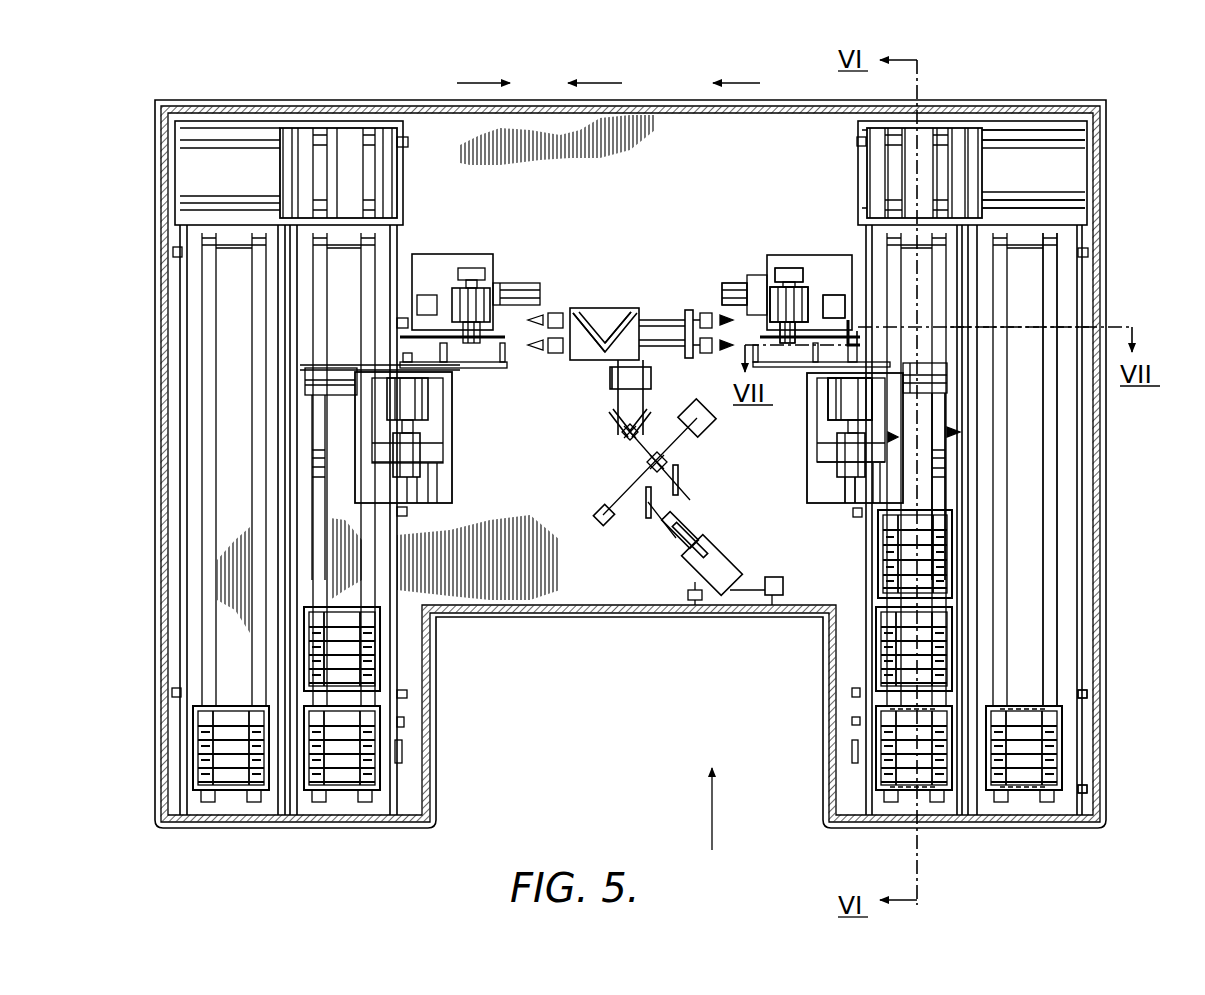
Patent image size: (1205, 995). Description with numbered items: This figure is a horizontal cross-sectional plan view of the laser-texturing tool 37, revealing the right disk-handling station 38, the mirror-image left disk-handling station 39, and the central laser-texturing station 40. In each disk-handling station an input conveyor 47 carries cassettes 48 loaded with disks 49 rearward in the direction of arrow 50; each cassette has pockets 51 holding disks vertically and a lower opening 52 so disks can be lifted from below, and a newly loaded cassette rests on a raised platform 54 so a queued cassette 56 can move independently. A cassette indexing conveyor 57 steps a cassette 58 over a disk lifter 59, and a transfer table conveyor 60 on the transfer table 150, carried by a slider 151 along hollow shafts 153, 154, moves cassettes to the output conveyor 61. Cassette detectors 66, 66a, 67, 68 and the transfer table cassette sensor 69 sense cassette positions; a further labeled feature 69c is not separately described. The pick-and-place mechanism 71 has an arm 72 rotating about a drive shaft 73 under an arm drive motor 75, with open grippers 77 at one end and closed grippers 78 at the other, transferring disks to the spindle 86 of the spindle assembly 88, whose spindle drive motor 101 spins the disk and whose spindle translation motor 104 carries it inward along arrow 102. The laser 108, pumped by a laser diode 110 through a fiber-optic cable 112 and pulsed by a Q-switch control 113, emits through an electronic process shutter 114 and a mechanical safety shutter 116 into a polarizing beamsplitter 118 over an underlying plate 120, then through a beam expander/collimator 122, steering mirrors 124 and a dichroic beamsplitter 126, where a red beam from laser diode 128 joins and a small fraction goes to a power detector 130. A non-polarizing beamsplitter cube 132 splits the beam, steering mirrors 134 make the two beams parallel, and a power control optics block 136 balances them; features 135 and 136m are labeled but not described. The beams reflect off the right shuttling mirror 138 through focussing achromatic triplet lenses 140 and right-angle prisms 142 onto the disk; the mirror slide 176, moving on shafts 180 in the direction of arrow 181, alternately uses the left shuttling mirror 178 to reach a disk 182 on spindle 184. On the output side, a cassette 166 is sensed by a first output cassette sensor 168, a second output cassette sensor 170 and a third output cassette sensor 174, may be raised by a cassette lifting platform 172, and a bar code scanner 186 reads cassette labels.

The laser-texturing tool 37 is at (590, 702).
The right disk-handling station 38 is at (1005, 843).
The left disk-handling station 39 is at (289, 843).
The laser-texturing station 40 is at (556, 640).
The input conveyor 47 is at (940, 583).
The cassette 48 is at (883, 780).
The disk 49 is at (722, 300).
The arrow 50 is at (710, 818).
The pocket 51 is at (870, 812).
The lower opening 52 is at (930, 793).
The raised platform 54 is at (943, 807).
The cassette 56 is at (952, 657).
The cassette indexing conveyor 57 is at (900, 437).
The cassette 58 is at (962, 432).
The disk lifter 59 is at (957, 330).
The transfer table conveyor 60 is at (926, 174).
The output conveyor 61 is at (1062, 585).
The cassette detector 66 is at (852, 721).
The cassette detector 66a is at (856, 517).
The cassette detector 67 is at (852, 693).
The cassette detector 68 is at (850, 320).
The transfer table cassette sensor 69 is at (857, 141).
The cassette 69c is at (878, 575).
The pick-and-place mechanism 71 is at (870, 463).
The arm 72 is at (878, 498).
The drive shaft 73 is at (832, 325).
The arm drive motor 75 is at (875, 410).
The grippers 77 is at (953, 393).
The grippers 78 is at (812, 367).
The spindle 86 is at (810, 290).
The spindle assembly 88 is at (800, 285).
The spindle drive motor 101 is at (789, 268).
The arrow 102 is at (753, 82).
The spindle translation motor 104 is at (790, 320).
The laser 108 is at (704, 578).
The laser diode 110 is at (778, 605).
The fiber-optic cable 112 is at (768, 598).
The Q-switch control 113 is at (695, 602).
The electronic process shutter 114 is at (690, 592).
The mechanical safety shutter 116 is at (683, 560).
The polarizing beamsplitter 118 is at (694, 536).
The underlying plate 120 is at (640, 545).
The beam expander/collimator 122 is at (670, 548).
The steering mirrors 124 is at (680, 480).
The dichroic beamsplitter 126 is at (650, 462).
The laser diode 128 is at (600, 511).
The power detector 130 is at (708, 430).
The non-polarizing beamsplitter cube 132 is at (626, 438).
The steering mirrors 134 is at (612, 427).
The optical tube 135 is at (617, 395).
The power control optics block 136 is at (610, 375).
The mirror 136m is at (645, 367).
The right shuttling mirror 138 is at (612, 318).
The focussing achromatic triplet lens 140 is at (706, 338).
The right-angle prism 142 is at (706, 312).
The transfer table 150 is at (972, 178).
The slider 151 is at (985, 162).
The hollow shaft 153 is at (1042, 150).
The hollow shaft 154 is at (1063, 205).
The cassette 166 is at (483, 82).
The first output cassette sensor 168 is at (1085, 795).
The second output cassette sensor 170 is at (1090, 253).
The cassette lifting platform 172 is at (1023, 767).
The third output cassette sensor 174 is at (1085, 698).
The mirror slide 176 is at (592, 330).
The left shuttling mirror 178 is at (602, 345).
The shafts 180 is at (690, 318).
The arrow 181 is at (608, 82).
The disk 182 is at (497, 336).
The spindle 184 is at (440, 340).
The bar code scanner 186 is at (852, 752).